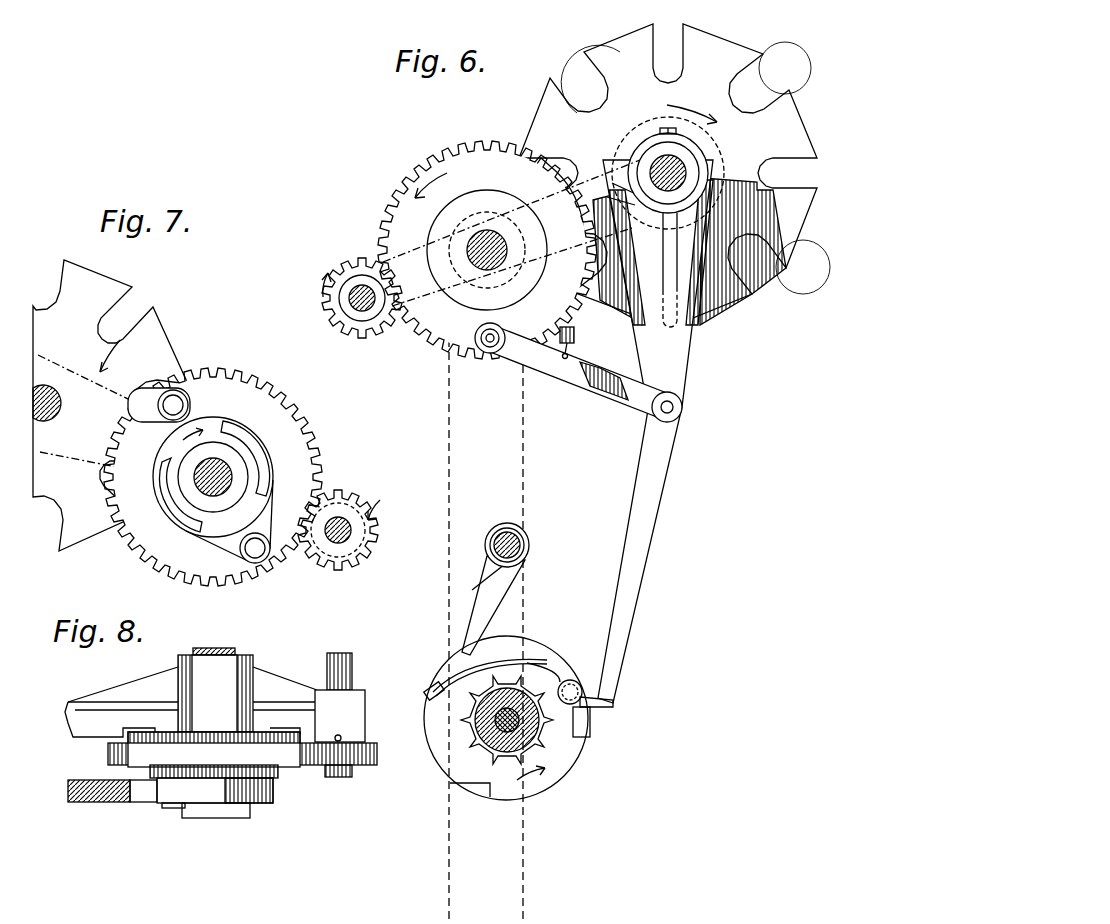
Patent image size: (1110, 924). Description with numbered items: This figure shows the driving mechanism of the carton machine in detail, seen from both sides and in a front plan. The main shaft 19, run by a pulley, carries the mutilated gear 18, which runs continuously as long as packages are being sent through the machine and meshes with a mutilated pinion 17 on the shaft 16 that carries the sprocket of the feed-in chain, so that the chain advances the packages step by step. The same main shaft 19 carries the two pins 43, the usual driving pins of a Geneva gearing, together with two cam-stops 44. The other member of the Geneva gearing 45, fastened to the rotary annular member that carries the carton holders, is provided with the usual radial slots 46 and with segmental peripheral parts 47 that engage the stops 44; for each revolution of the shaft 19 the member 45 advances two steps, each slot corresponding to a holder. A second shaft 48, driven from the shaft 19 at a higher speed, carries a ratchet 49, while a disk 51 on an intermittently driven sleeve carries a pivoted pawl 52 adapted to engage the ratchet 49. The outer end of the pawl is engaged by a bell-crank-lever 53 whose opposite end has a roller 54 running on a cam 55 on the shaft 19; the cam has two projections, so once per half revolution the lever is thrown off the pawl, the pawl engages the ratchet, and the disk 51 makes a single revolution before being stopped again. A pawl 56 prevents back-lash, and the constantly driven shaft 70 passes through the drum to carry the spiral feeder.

In FIG. 6, the shaft 16 is at (361, 285).
In FIG. 7, the shaft 16 is at (358, 530).
In FIG. 8, the shaft 16 is at (343, 672).
In FIG. 6, the mutilated pinion 17 is at (368, 258).
In FIG. 7, the mutilated pinion 17 is at (349, 497).
In FIG. 8, the mutilated pinion 17 is at (366, 768).
In FIG. 6, the mutilated gear 18 is at (423, 172).
In FIG. 7, the mutilated gear 18 is at (302, 470).
In FIG. 8, the mutilated gear 18 is at (106, 755).
In FIG. 6, the main shaft 19 is at (485, 232).
In FIG. 7, the main shaft 19 is at (213, 465).
In FIG. 8, the main shaft 19 is at (222, 647).
In FIG. 7, the pins 43 is at (175, 400).
In FIG. 8, the pins 43 is at (168, 808).
In FIG. 7, the cam-stops 44 is at (253, 447).
In FIG. 8, the cam-stops 44 is at (270, 797).
In FIG. 6, the Geneva gearing member 45 is at (668, 174).
In FIG. 7, the Geneva gearing member 45 is at (110, 405).
In FIG. 8, the Geneva gearing member 45 is at (93, 800).
In FIG. 6, the radial slots 46 is at (761, 175).
In FIG. 8, the radial slots 46 is at (140, 793).
In FIG. 6, the segmental peripheral parts 47 is at (742, 56).
In FIG. 6, the shaft 48 is at (547, 720).
In FIG. 6, the ratchet 49 is at (537, 740).
In FIG. 6, the disk 51 is at (543, 782).
In FIG. 6, the pivoted pawl 52 is at (612, 703).
In FIG. 6, the bell-crank-lever 53 is at (650, 488).
In FIG. 6, the roller 54 is at (488, 354).
In FIG. 6, the cam 55 is at (455, 318).
In FIG. 8, the cam 55 is at (183, 738).
In FIG. 6, the pawl 56 is at (472, 622).
In FIG. 6, the shaft 70 is at (662, 165).
In FIG. 7, the shaft 70 is at (52, 412).